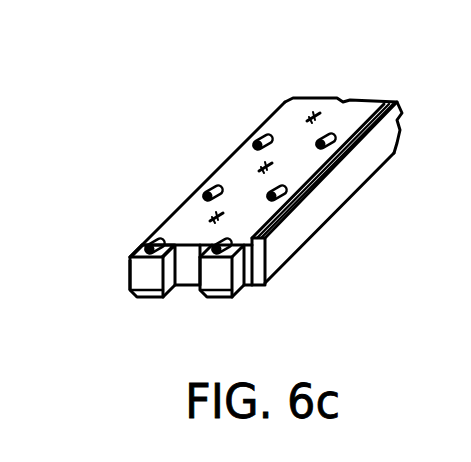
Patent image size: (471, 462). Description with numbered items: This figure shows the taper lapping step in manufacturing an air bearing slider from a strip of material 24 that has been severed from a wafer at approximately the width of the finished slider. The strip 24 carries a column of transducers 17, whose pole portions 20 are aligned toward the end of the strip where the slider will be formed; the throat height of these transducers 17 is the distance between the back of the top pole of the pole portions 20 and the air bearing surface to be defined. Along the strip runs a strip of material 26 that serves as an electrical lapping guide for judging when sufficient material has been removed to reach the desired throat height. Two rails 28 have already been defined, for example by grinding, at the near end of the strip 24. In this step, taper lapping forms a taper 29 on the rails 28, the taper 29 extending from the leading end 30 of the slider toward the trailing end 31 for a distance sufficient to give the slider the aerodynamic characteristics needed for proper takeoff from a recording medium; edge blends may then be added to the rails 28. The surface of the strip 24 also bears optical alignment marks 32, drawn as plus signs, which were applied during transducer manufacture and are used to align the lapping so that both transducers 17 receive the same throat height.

The transducers 17 is at (160, 240).
The pole portions 20 is at (146, 251).
The strip of material 24 is at (361, 251).
The strip of material (electrical lapping guide) 26 is at (338, 162).
The rails 28 is at (141, 283).
The taper 29 is at (145, 298).
The leading end 30 is at (233, 287).
The trailing end 31 is at (135, 270).
The optical alignment marks 32 is at (268, 162).